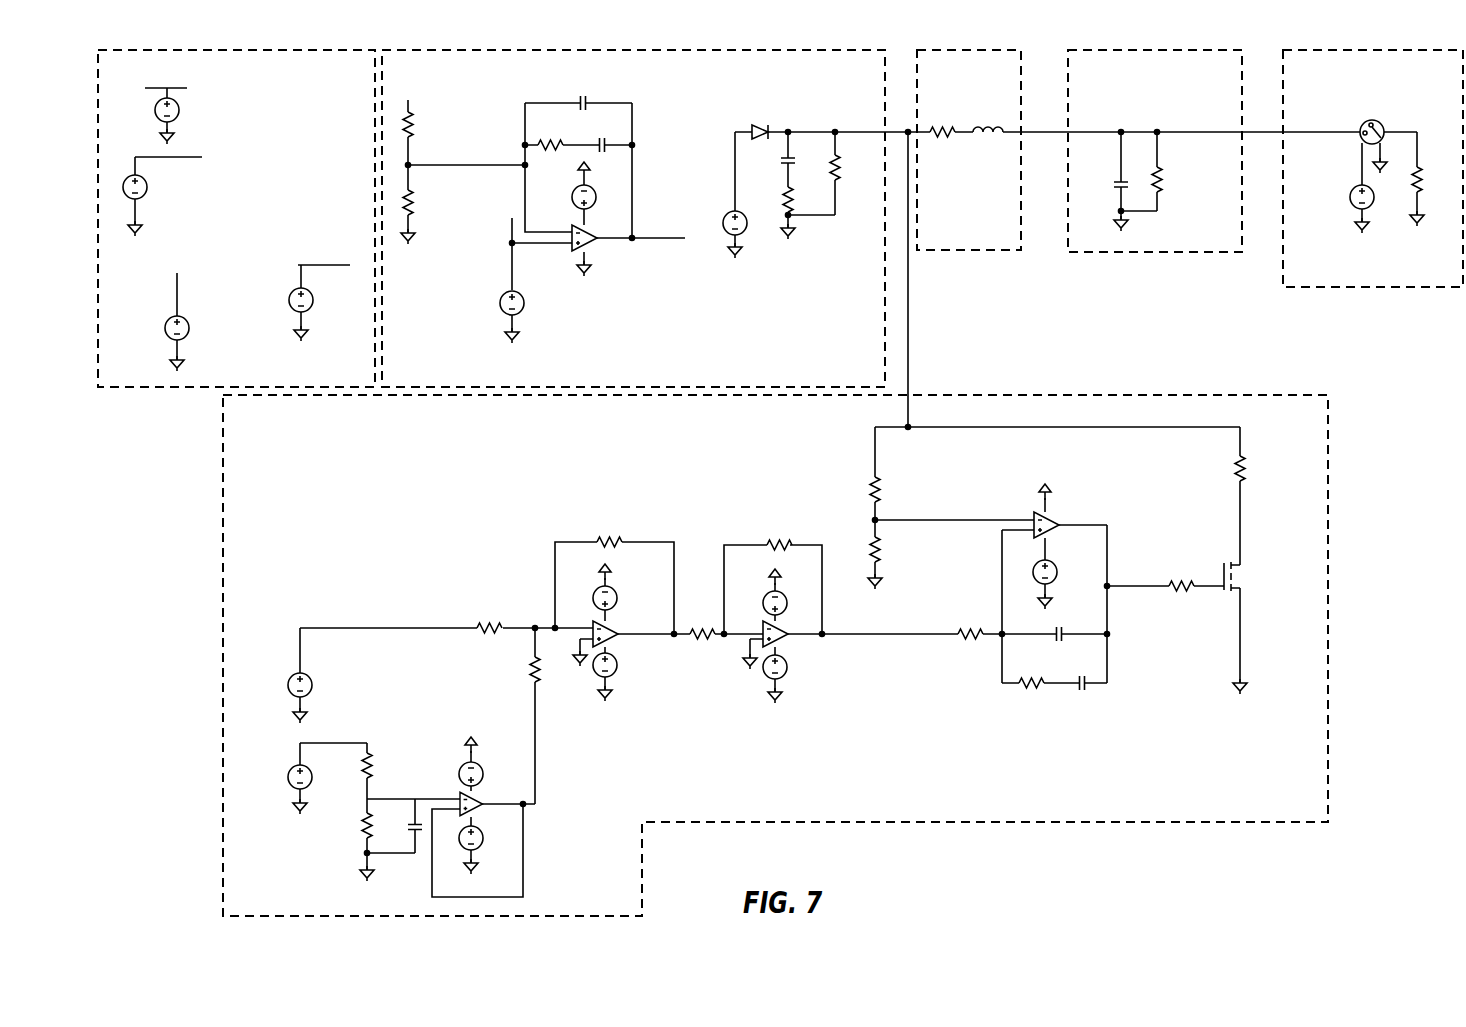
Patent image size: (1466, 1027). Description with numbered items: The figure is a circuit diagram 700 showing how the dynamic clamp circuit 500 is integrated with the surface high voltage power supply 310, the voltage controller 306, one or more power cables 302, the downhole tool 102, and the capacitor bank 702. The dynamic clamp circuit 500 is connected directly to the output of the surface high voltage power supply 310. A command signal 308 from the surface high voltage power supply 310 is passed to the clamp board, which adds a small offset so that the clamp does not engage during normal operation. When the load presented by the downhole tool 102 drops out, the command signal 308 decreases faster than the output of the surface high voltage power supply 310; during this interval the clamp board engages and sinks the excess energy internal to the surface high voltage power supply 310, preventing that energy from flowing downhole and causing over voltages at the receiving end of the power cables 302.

The circuit diagram 700 is at (195, 836).
The voltage controller 306 is at (355, 86).
The surface high voltage power supply 310 is at (868, 86).
The command signal 308 is at (388, 351).
The power cable 302 is at (985, 86).
The capacitor bank 702 is at (1168, 86).
The downhole tool 102 is at (1392, 86).
The dynamic clamp circuit 500 is at (297, 444).